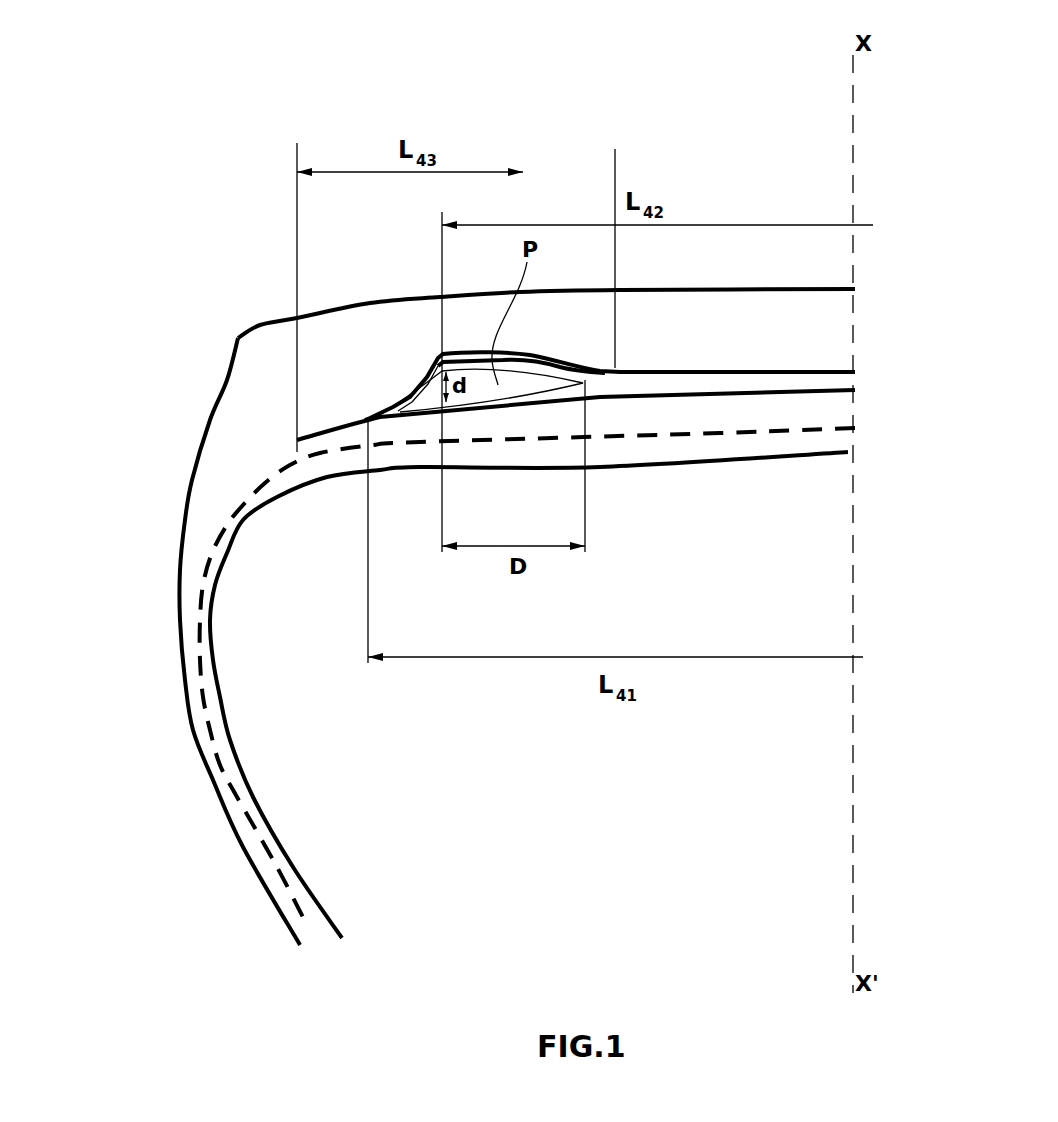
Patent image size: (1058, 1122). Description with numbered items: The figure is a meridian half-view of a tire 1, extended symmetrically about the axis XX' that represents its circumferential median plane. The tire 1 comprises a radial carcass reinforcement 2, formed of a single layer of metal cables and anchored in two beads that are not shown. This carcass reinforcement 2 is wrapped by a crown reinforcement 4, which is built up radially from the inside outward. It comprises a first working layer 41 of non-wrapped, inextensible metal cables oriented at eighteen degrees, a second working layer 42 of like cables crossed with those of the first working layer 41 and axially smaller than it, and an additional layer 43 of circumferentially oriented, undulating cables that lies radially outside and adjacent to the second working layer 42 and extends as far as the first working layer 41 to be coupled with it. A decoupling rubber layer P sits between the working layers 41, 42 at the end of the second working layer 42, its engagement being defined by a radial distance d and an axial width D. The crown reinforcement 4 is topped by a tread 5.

The tire 1 is at (142, 297).
The radial carcass reinforcement 2 is at (210, 560).
The crown reinforcement 4 is at (885, 380).
The tread 5 is at (755, 305).
The first working layer 41 is at (730, 393).
The second working layer 42 is at (768, 370).
The additional layer 43 is at (414, 388).